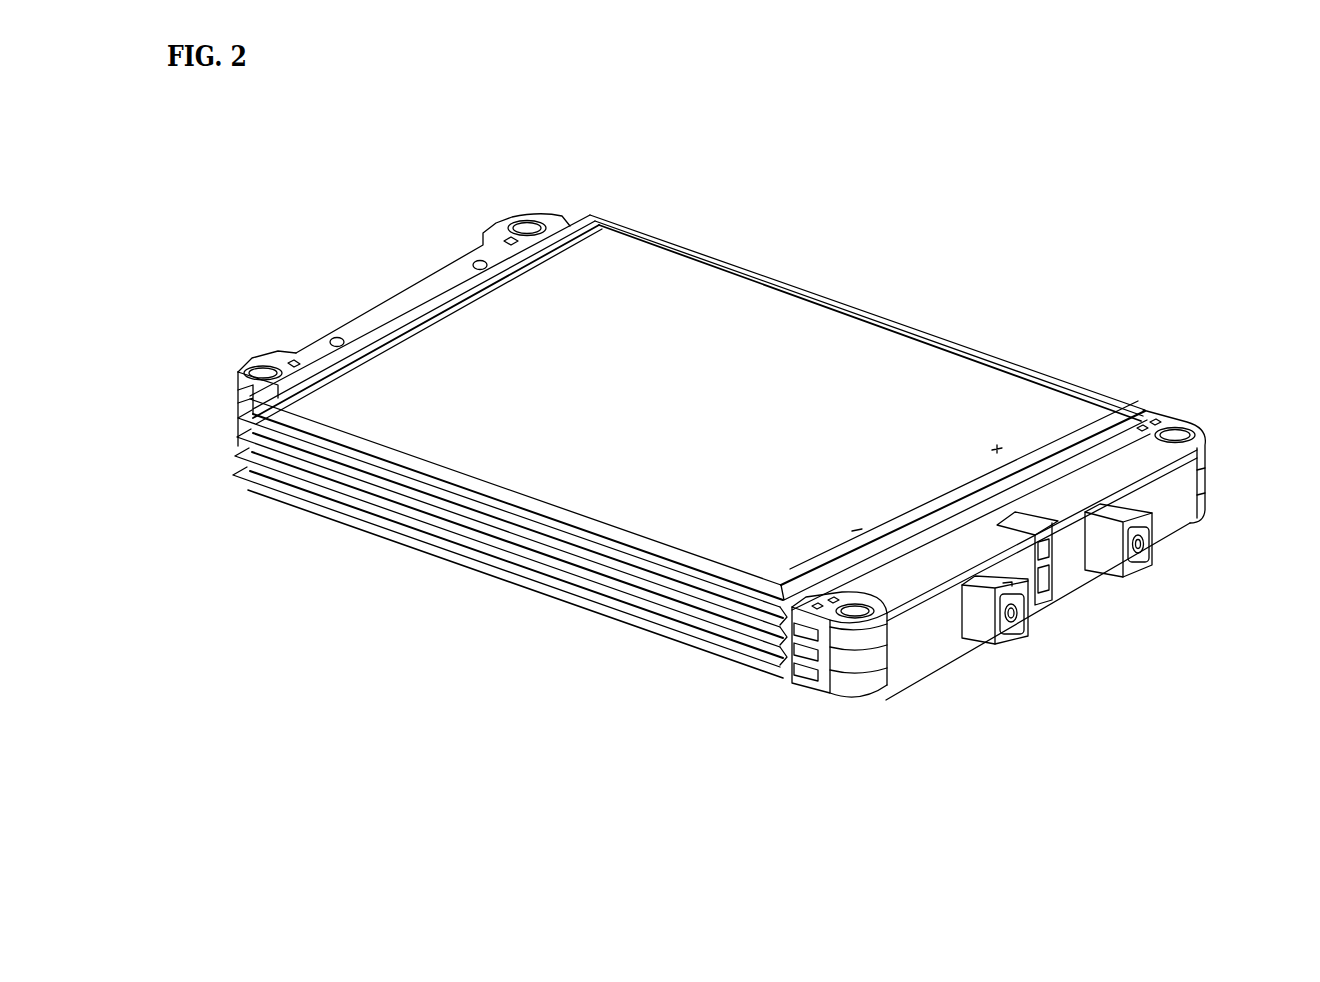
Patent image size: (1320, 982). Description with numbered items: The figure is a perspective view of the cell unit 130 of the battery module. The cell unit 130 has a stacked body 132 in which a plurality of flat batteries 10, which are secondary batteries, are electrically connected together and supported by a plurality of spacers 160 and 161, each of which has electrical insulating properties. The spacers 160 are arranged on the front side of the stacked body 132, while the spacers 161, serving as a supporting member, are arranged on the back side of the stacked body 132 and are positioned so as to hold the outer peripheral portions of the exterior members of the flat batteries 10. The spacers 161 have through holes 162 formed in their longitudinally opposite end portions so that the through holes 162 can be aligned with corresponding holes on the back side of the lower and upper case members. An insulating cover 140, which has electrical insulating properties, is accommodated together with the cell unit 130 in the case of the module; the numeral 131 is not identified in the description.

The flat battery 10 is at (523, 455).
The cell unit 130 is at (988, 347).
The fixing bracket 131 is at (1003, 633).
The stacked body 132 is at (1137, 560).
The insulating cover 140 is at (1168, 510).
The spacer 160 is at (807, 677).
The spacer 161 is at (247, 412).
The through hole 162 is at (270, 375).